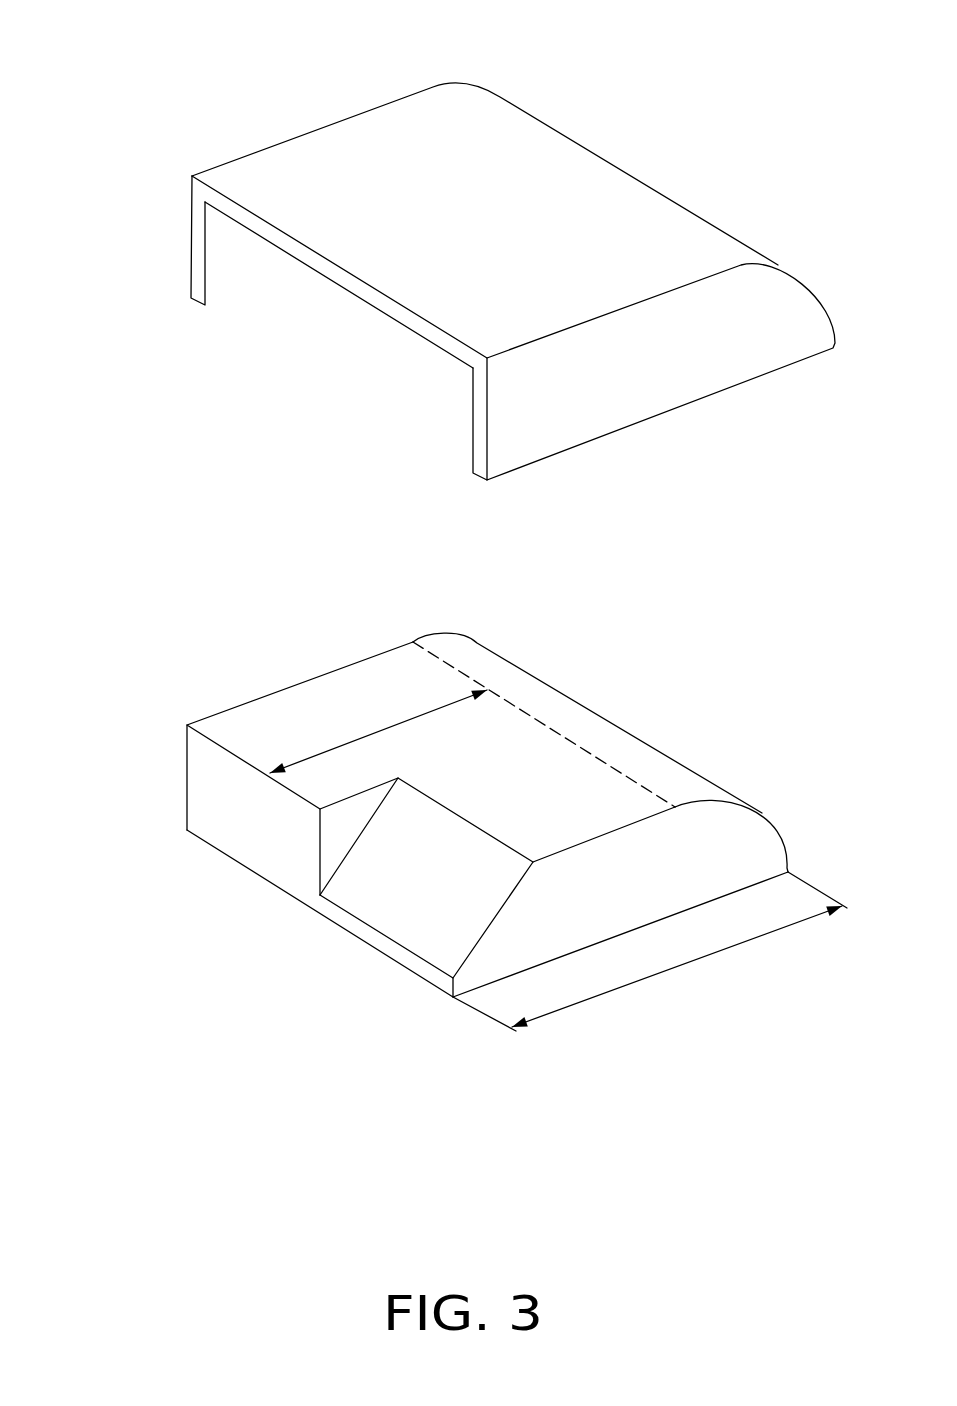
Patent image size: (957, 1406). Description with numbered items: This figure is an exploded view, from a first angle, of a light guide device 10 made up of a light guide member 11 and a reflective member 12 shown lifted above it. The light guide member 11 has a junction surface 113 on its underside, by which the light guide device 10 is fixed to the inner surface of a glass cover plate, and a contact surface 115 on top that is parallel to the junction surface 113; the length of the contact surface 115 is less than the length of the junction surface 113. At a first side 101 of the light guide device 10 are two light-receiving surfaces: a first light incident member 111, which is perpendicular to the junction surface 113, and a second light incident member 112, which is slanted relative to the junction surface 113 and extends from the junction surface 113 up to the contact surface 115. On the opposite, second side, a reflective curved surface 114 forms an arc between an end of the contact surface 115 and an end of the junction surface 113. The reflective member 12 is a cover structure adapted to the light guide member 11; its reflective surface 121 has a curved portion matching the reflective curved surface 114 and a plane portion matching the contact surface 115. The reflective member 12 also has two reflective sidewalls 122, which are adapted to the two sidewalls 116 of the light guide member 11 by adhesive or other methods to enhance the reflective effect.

The light guide device 10 is at (191, 20).
The light guide member 11 is at (155, 696).
The reflective member 12 is at (263, 483).
The first side 101 is at (295, 875).
The first light incident member 111 is at (260, 822).
The second light incident member 112 is at (412, 902).
The junction surface 113 is at (423, 993).
The reflective curved surface 114 is at (669, 777).
The contact surface 115 is at (330, 693).
The sidewalls 116 is at (721, 833).
The reflective surface 121 is at (421, 232).
The reflective sidewalls 122 is at (603, 368).